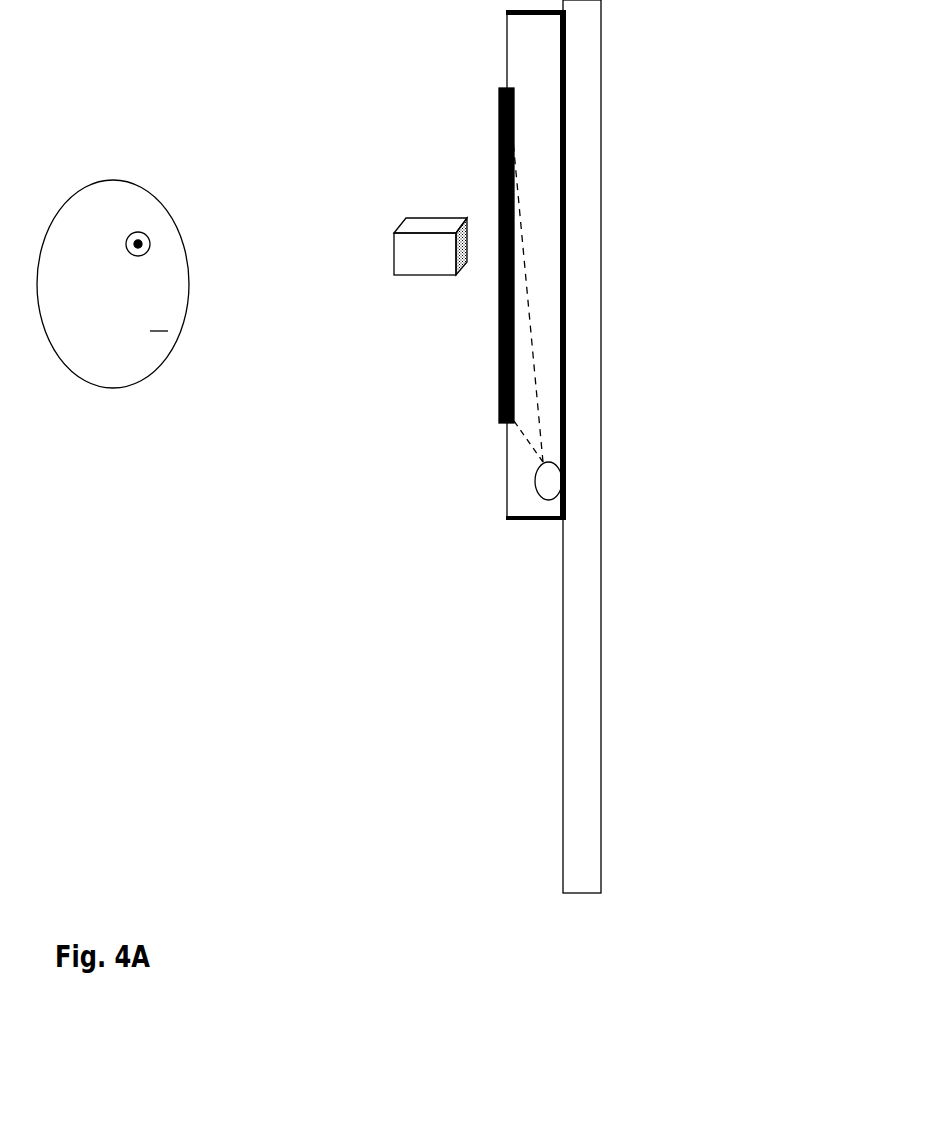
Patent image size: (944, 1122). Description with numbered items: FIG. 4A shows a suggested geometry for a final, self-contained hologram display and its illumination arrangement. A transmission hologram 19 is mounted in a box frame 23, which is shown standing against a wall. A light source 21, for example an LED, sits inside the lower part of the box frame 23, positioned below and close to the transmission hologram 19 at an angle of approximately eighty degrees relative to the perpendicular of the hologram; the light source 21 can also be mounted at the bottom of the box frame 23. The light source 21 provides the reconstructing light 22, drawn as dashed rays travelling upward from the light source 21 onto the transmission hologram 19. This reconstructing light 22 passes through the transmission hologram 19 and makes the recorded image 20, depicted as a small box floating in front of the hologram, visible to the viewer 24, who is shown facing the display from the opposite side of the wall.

The transmission hologram 19 is at (490, 348).
The recorded image 20 is at (395, 218).
The light source 21 is at (567, 483).
The reconstructing light 22 is at (524, 348).
The box frame 23 is at (505, 482).
The viewer 24 is at (113, 310).
The element wall is at (563, 668).